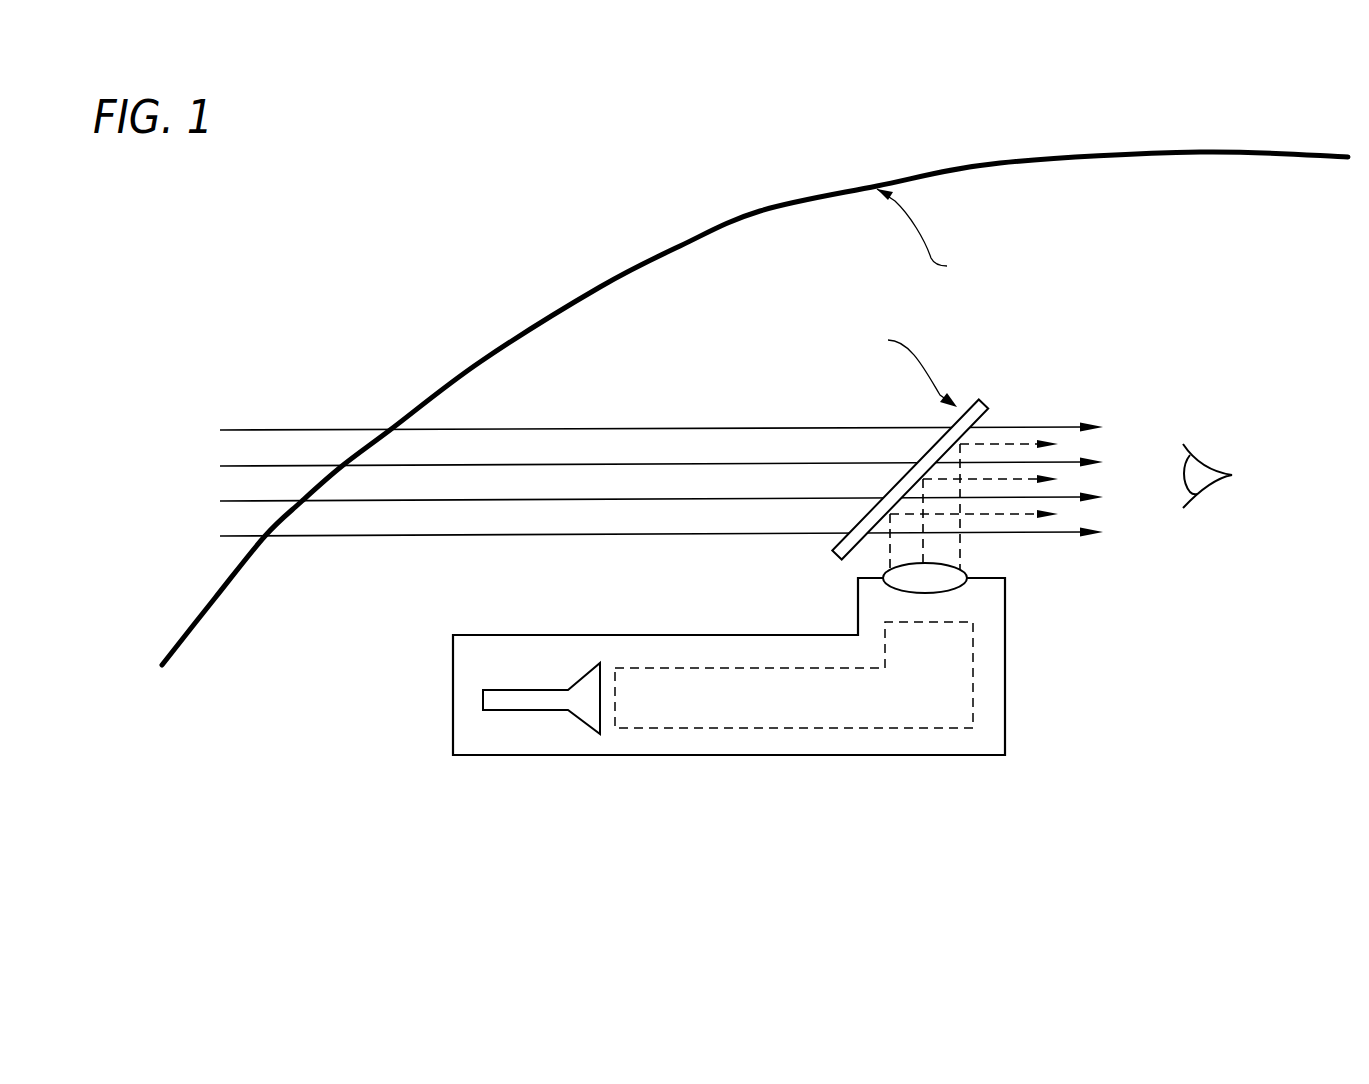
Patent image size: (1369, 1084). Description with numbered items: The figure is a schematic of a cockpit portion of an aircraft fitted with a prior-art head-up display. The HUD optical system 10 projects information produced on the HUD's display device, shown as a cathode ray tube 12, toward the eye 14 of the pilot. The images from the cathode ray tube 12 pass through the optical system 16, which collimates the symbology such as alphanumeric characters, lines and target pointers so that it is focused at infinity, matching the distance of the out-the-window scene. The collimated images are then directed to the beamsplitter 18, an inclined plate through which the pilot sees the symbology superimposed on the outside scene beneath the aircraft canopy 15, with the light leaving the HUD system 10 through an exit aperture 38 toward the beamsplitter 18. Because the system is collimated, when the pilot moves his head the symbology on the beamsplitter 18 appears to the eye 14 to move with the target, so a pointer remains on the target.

The head-up display optical system 10 is at (1005, 666).
The cathode ray tube 12 is at (588, 688).
The eye 14 is at (1185, 485).
The aircraft canopy 15 is at (755, 210).
The optical system 16 is at (900, 723).
The beamsplitter 18 is at (985, 403).
The exit aperture lens 38 is at (952, 587).